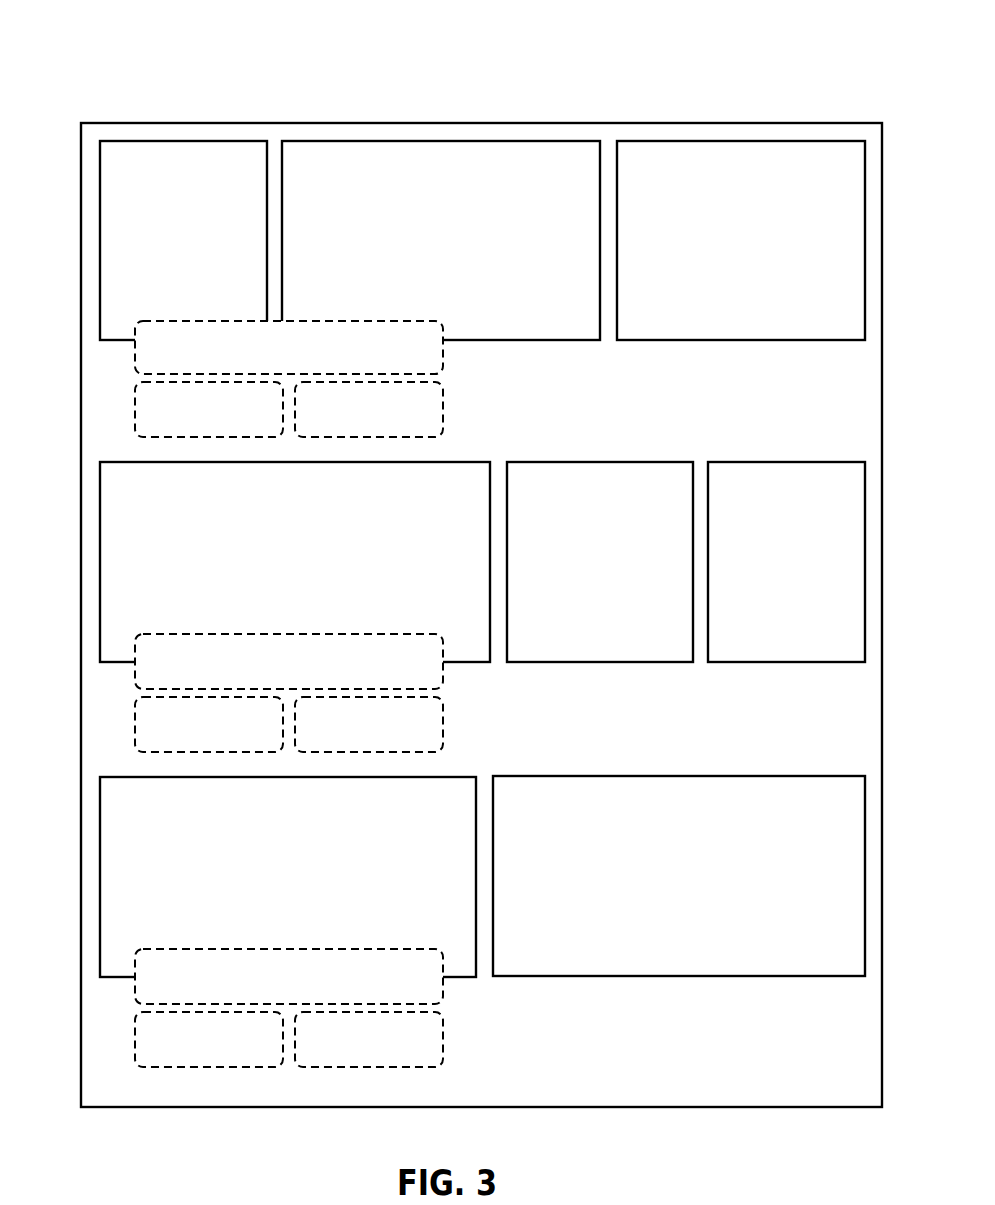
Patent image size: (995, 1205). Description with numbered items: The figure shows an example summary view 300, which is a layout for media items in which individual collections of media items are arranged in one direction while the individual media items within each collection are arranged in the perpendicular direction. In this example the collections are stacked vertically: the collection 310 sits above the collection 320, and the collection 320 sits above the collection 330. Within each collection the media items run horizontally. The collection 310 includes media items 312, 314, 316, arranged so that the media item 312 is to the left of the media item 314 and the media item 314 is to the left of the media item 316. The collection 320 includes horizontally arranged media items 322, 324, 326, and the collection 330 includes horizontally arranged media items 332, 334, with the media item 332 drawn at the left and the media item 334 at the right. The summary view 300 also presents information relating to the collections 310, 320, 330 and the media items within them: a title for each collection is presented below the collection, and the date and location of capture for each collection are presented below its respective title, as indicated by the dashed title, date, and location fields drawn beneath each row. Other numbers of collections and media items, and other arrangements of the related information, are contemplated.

The summary view 300 is at (505, 122).
The collection 310 is at (439, 289).
The media item 312 is at (183, 240).
The media item 314 is at (441, 240).
The media item 316 is at (741, 240).
The collection 320 is at (439, 607).
The media item 322 is at (295, 562).
The media item 324 is at (600, 562).
The media item 326 is at (786, 562).
The collection 330 is at (439, 921).
The media item 332 is at (288, 877).
The media item 334 is at (679, 876).